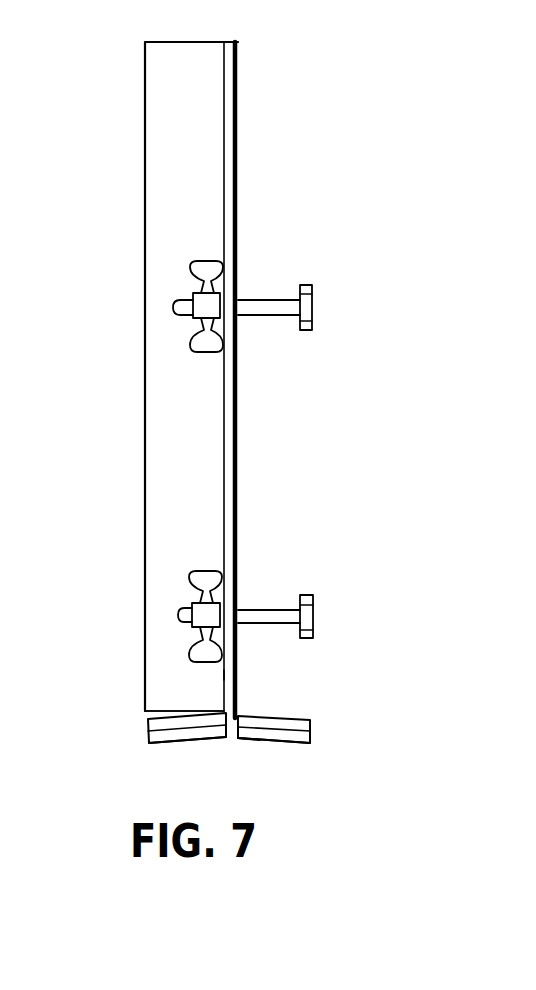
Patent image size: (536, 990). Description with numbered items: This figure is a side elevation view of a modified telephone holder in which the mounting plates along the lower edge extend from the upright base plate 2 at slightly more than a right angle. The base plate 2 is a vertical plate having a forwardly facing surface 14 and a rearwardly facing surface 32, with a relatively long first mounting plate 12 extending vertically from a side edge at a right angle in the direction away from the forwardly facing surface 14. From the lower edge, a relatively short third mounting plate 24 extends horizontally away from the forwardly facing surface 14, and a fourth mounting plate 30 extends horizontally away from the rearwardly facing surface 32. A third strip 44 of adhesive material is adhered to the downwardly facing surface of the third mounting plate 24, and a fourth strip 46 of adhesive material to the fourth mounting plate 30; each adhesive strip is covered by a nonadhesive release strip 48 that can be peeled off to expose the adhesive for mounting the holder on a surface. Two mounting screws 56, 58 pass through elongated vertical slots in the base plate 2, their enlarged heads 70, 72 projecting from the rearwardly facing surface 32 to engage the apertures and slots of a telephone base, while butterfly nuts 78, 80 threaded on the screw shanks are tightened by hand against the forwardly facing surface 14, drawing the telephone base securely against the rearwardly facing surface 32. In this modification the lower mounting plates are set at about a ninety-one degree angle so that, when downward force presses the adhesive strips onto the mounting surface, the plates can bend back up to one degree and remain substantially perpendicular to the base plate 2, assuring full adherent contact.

The base plate 2 is at (226, 675).
The first mounting plate 12 is at (163, 95).
The forwardly facing surface 14 is at (223, 421).
The third mounting plate 24 is at (162, 710).
The fourth mounting plate 30 is at (310, 716).
The rearwardly facing surface 32 is at (240, 462).
The third strip of adhesive material 44 is at (148, 733).
The fourth strip of adhesive material 46 is at (310, 740).
The nonadhesive release strip 48 is at (260, 742).
The mounting screw 56 is at (282, 298).
The mounting screw 58 is at (263, 608).
The enlarged head 70 is at (312, 307).
The enlarged head 72 is at (313, 612).
The butterfly nut 78 is at (190, 262).
The butterfly nut 80 is at (193, 573).